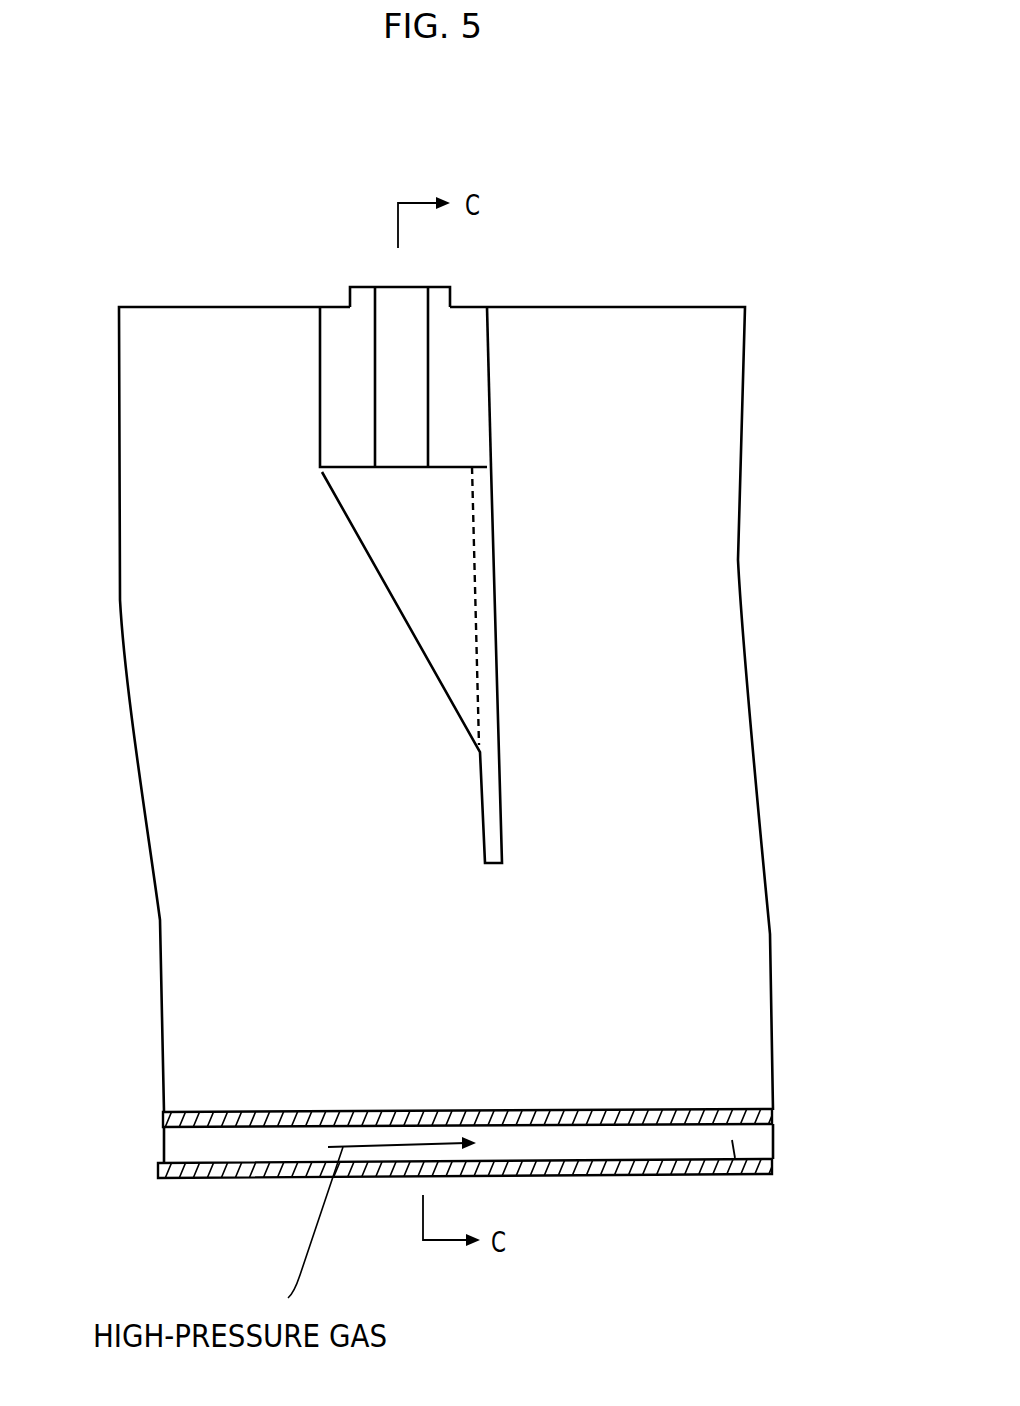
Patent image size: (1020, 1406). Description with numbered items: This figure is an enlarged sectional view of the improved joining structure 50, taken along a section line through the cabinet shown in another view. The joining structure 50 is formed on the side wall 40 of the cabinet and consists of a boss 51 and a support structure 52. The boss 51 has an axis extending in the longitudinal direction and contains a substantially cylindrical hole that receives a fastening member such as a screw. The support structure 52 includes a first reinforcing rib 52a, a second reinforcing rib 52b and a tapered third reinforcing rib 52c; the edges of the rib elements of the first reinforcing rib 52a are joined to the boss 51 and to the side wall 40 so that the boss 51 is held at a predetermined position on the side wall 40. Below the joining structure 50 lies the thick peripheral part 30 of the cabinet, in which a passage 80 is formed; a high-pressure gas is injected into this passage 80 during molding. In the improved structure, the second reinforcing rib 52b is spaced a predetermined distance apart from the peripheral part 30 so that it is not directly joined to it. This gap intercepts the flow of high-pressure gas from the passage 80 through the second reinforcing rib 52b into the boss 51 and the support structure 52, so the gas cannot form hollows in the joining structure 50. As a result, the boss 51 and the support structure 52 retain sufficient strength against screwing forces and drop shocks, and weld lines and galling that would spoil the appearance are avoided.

The thick peripheral part 30 is at (598, 1174).
The side wall 40 is at (210, 323).
The joining structure 50 is at (464, 509).
The boss 51 is at (385, 285).
The support structure 52 is at (510, 585).
The first reinforcing rib 52a is at (467, 380).
The second reinforcing rib 52b is at (469, 665).
The third reinforcing rib 52c is at (445, 558).
The passage 80 is at (735, 1158).